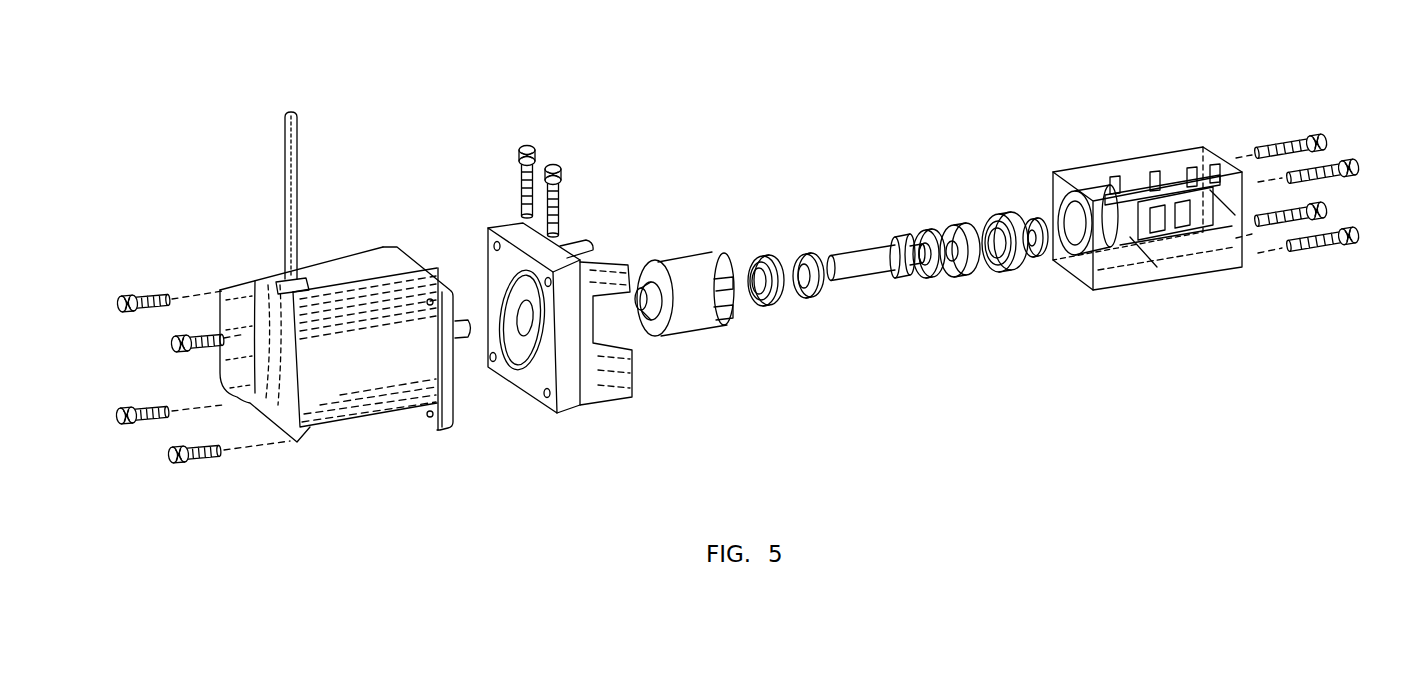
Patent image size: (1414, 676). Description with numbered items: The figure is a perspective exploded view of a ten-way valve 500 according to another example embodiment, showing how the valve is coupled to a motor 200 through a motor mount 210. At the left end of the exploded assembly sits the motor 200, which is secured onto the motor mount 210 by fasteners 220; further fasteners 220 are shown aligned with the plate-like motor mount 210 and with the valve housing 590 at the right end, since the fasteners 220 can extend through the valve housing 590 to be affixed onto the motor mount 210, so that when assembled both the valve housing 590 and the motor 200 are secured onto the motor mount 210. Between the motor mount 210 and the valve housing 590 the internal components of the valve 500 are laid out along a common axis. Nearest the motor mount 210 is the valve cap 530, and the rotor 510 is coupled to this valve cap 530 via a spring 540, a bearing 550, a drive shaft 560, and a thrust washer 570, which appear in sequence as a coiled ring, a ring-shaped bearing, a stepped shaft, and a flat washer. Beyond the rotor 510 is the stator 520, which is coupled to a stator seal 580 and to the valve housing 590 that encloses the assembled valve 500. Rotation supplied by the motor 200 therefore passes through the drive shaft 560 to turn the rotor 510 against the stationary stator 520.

The motor 200 is at (350, 418).
The motor mount 210 is at (555, 413).
The fasteners 220 is at (173, 450).
The valve 500 is at (1242, 97).
The rotor 510 is at (955, 278).
The stator 520 is at (1002, 273).
The valve cap 530 is at (683, 322).
The spring 540 is at (770, 304).
The bearing 550 is at (818, 298).
The drive shaft 560 is at (877, 272).
The thrust washer 570 is at (925, 280).
The stator seal 580 is at (1038, 258).
The valve housing 590 is at (1170, 272).